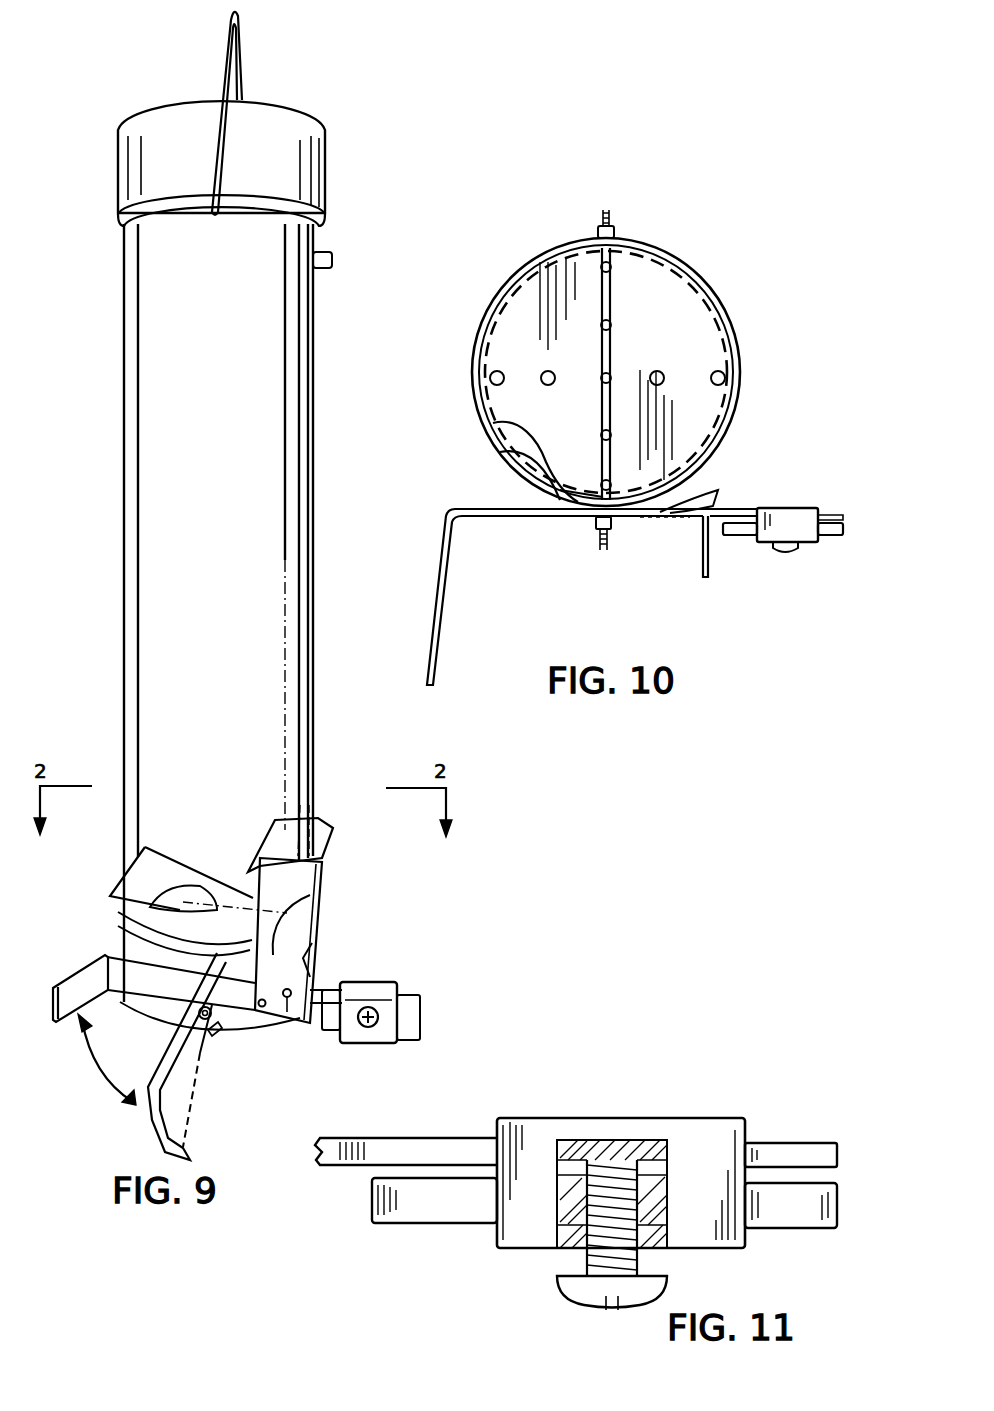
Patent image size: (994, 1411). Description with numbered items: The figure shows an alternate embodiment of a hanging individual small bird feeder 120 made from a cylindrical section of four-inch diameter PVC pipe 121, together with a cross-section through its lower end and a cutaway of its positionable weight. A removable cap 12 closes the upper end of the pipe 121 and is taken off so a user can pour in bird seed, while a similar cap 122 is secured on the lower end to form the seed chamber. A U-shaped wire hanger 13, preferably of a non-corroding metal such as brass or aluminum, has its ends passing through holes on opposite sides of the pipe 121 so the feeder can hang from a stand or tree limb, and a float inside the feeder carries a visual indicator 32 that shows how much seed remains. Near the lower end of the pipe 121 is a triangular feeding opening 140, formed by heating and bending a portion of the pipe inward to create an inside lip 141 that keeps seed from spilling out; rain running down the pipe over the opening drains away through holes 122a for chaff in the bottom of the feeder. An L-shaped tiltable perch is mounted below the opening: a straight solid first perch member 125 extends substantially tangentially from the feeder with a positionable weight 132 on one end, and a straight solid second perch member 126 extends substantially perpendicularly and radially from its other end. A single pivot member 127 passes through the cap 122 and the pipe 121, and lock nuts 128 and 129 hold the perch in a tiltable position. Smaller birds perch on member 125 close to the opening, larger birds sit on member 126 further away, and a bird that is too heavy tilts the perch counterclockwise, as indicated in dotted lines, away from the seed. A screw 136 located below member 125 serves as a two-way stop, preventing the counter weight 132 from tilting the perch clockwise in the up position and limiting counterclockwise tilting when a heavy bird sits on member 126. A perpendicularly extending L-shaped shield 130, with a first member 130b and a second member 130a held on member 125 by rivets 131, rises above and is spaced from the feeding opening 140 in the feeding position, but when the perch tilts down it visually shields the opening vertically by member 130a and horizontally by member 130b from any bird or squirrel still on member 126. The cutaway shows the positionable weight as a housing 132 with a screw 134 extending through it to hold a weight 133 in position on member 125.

In FIG. 9, the removable cap 12 is at (317, 163).
In FIG. 9, the U-shaped wire hanger 13 is at (244, 61).
In FIG. 9, the visual indicator 32 is at (329, 253).
In FIG. 9, the hanging individual small bird feeder 120 is at (338, 106).
In FIG. 9, the PVC pipe 121 is at (297, 603).
In FIG. 10, the cap 122 is at (700, 311).
In FIG. 10, the holes for chaff 122a is at (612, 380).
In FIG. 9, the first perch member 125 is at (162, 992).
In FIG. 10, the first perch member 125 is at (536, 518).
In FIG. 11, the first perch member 125 is at (812, 1143).
In FIG. 9, the second perch member 126 is at (75, 972).
In FIG. 10, the second perch member 126 is at (445, 630).
In FIG. 9, the pivot member 127 is at (205, 998).
In FIG. 10, the pivot member 127 is at (612, 306).
In FIG. 10, the lock nut 128 is at (613, 230).
In FIG. 10, the lock nut 129 is at (611, 524).
In FIG. 9, the L-shaped shield 130 is at (318, 910).
In FIG. 10, the L-shaped shield 130 is at (710, 547).
In FIG. 9, the second shield member 130a is at (287, 947).
In FIG. 9, the first shield member 130b is at (312, 962).
In FIG. 9, the rivets 131 is at (287, 1000).
In FIG. 10, the rivets 131 is at (708, 492).
In FIG. 9, the positionable weight housing 132 is at (398, 990).
In FIG. 10, the positionable weight housing 132 is at (795, 507).
In FIG. 11, the positionable weight housing 132 is at (730, 1128).
In FIG. 10, the weight 133 is at (836, 536).
In FIG. 11, the weight 133 is at (795, 1218).
In FIG. 9, the screw 134 is at (375, 1026).
In FIG. 10, the screw 134 is at (790, 554).
In FIG. 11, the screw 134 is at (560, 1287).
In FIG. 9, the screw stop 136 is at (230, 1020).
In FIG. 9, the feeding opening 140 is at (183, 902).
In FIG. 10, the feeding opening 140 is at (533, 460).
In FIG. 10, the inside lip 141 is at (493, 423).